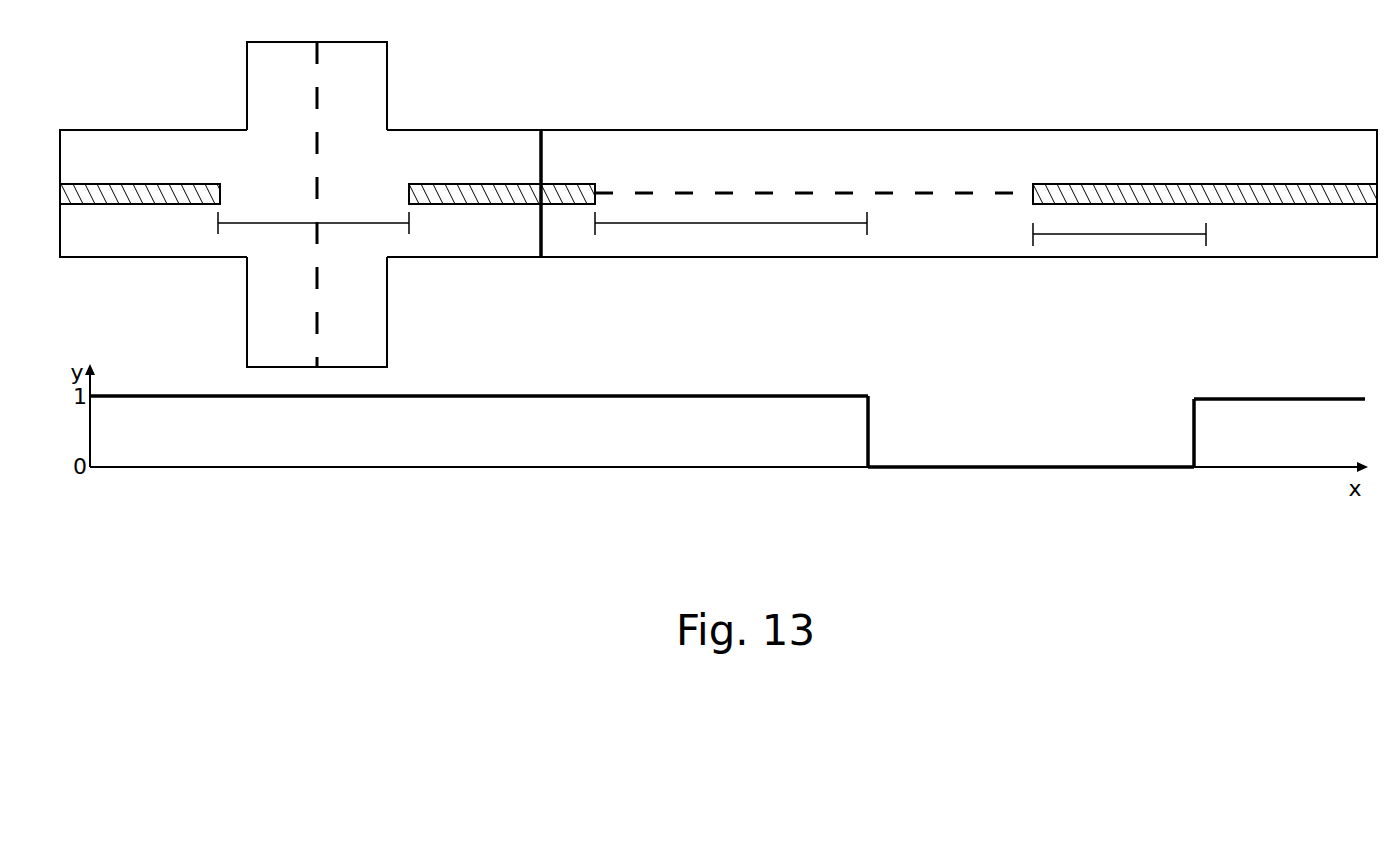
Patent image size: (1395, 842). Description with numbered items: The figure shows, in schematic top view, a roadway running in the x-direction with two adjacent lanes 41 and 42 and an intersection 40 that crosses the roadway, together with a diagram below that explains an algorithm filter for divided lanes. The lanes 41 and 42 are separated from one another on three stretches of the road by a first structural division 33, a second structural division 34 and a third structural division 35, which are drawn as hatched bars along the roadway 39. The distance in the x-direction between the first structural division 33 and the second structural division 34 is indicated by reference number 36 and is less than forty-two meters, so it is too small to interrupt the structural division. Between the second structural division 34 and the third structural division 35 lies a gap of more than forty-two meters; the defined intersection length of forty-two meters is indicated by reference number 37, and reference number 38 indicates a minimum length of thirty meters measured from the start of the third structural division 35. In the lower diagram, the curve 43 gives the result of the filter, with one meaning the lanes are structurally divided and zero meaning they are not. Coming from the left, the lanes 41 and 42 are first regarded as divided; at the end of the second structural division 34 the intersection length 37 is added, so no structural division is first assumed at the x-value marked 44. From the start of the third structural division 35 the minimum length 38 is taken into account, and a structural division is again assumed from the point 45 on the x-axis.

The first structural division 33 is at (92, 184).
The second structural division 34 is at (502, 183).
The third structural division 35 is at (1142, 183).
The distance between first and second structural divisions 36 is at (365, 225).
The defined intersection length 37 is at (728, 228).
The minimum length for a structural division 38 is at (1148, 240).
The road channel 39 is at (146, 130).
The intersection 40 is at (350, 183).
The lane 41 is at (833, 167).
The lane 42 is at (952, 237).
The curve 43 is at (543, 393).
The x-value where no structural division is first assumed 44 is at (870, 470).
The point where structural division is again assumed 45 is at (1193, 470).